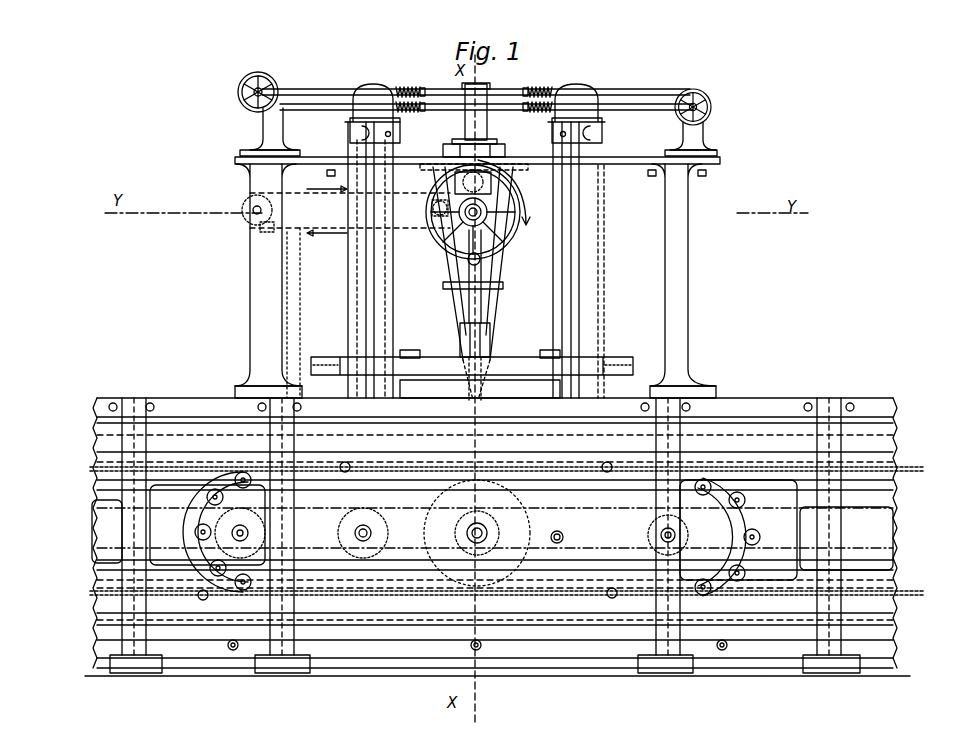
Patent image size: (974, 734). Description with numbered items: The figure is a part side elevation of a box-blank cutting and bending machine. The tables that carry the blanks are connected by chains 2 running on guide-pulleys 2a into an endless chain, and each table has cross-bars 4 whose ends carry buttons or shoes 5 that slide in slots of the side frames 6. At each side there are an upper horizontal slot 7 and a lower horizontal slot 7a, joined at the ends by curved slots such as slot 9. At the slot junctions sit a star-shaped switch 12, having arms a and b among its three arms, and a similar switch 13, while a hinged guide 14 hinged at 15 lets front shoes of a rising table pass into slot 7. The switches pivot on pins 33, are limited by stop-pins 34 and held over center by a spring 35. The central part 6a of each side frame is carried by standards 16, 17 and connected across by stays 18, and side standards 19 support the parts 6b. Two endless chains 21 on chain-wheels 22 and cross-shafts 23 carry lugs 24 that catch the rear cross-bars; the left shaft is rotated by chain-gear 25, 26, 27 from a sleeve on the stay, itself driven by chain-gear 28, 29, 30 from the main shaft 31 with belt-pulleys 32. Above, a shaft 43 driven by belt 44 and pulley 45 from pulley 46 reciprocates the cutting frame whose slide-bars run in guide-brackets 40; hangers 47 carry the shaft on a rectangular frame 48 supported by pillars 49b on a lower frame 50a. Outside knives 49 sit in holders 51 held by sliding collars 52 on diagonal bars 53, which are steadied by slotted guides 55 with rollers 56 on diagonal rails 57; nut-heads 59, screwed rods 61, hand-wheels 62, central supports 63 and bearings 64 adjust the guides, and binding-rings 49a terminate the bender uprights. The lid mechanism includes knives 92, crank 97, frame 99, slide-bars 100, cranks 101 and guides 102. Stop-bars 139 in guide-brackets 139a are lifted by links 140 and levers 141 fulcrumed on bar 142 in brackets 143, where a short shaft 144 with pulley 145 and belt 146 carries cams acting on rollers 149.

The chains 2 is at (908, 615).
The guide-pulleys 2a is at (703, 595).
The cross-bars 4 is at (775, 540).
The buttons or shoes 5 is at (625, 620).
The side frames 6 is at (777, 405).
The central part of side frame 6a is at (612, 520).
The parts of side frames surrounded by slots 6b is at (492, 530).
The upper horizontal slot 7 is at (440, 468).
The lower horizontal slot 7a is at (540, 600).
The inner curved slot 9 is at (770, 505).
The star-shaped switch 12 is at (270, 480).
The switch 13 is at (770, 570).
The hinged guide 14 is at (760, 475).
The hinge 15 is at (760, 490).
The standard 16 is at (285, 665).
The standard 17 is at (668, 665).
The stays 18 is at (560, 535).
The side standards 19 is at (838, 665).
The endless chains 21 is at (553, 534).
The chain-wheels 22 is at (690, 540).
The cross-shafts 23 is at (240, 524).
The lugs 24 is at (205, 600).
The chain-gear 25 is at (495, 529).
The chain-gear 26 is at (328, 544).
The chain-gear 27 is at (360, 560).
The chain-gear 28 is at (392, 565).
The chain-gear 29 is at (445, 525).
The chain-gear 30 is at (500, 535).
The main shaft 31 is at (460, 535).
The belt-pulleys 32 is at (556, 542).
The pins 33 is at (760, 600).
The stop-pins 34 is at (780, 612).
The spring 35 is at (200, 490).
The guide-brackets 40 is at (488, 338).
The shaft 43 is at (485, 208).
The belt 44 is at (500, 493).
The pulley 45 is at (500, 243).
The pulley 46 is at (490, 530).
The hangers 47 is at (520, 165).
The rectangular frame 48 is at (720, 160).
The outside knives 49 is at (478, 470).
The binding-rings 49a is at (495, 346).
The pillars 49b is at (690, 240).
The rectangular frame 50a is at (690, 388).
The holders 51 is at (500, 388).
The sliding collars 52 is at (545, 355).
The bars 53 is at (633, 362).
The slotted guides 55 is at (585, 207).
The rollers 56 is at (595, 135).
The diagonal rails 57 is at (515, 160).
The nut-heads 59 is at (580, 95).
The screwed rods 61 is at (620, 104).
The hand-wheels 62 is at (712, 110).
The central supports 63 is at (490, 88).
The bearings 64 is at (700, 90).
The knives 92 is at (418, 398).
The crank 97 is at (432, 212).
The frame 99 is at (490, 361).
The slide-bars 100 is at (478, 302).
The cranks 101 is at (455, 178).
The guides 102 is at (484, 262).
The stop-bars 139 is at (310, 455).
The guide-brackets 139a is at (320, 415).
The links 140 is at (302, 292).
The levers 141 is at (288, 240).
The bar 142 is at (268, 233).
The brackets 143 is at (248, 211).
The short shaft 144 is at (257, 226).
The pulley 145 is at (250, 226).
The belt 146 is at (262, 211).
The rollers 149 is at (250, 240).
The arm of switch a is at (292, 465).
The arm of switch b is at (248, 468).